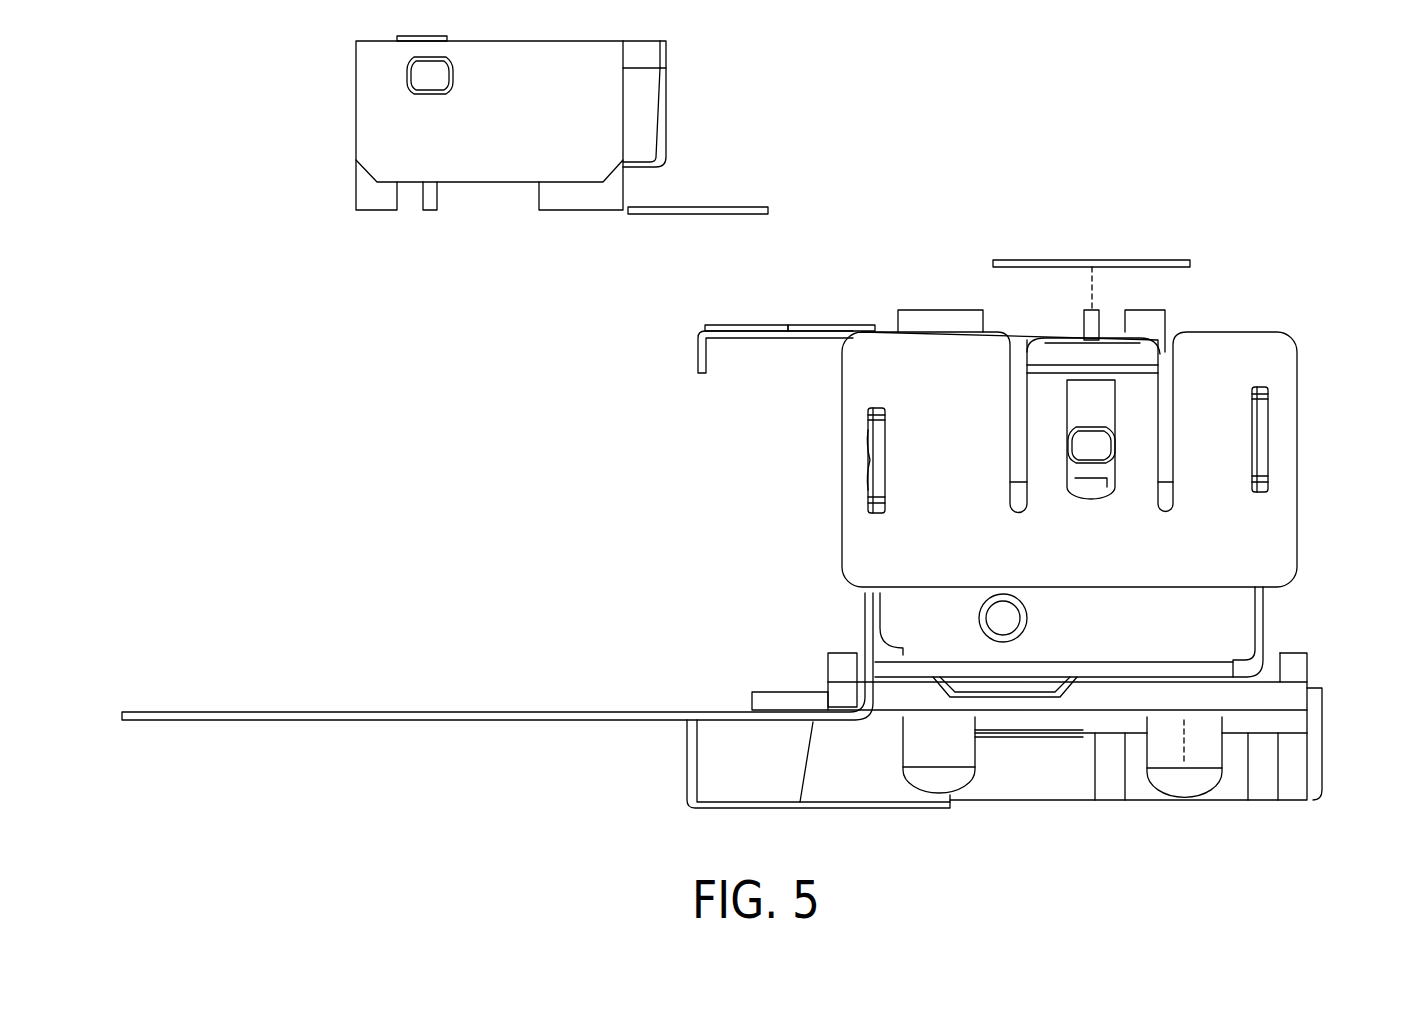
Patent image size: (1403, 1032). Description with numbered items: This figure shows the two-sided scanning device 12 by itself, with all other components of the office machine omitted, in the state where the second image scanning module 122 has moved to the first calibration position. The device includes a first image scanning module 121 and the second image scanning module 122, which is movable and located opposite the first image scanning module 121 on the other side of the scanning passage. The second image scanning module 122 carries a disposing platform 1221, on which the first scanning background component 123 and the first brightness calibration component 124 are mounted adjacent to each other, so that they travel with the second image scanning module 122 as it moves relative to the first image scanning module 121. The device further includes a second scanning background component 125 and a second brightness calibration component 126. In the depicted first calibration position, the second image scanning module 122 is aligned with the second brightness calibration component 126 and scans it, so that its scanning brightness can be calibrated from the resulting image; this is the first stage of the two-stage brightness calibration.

The two-sided scanning device 12 is at (1268, 138).
The first image scanning module 121 is at (430, 212).
The second image scanning module 122 is at (1092, 312).
The disposing platform 1221 is at (758, 335).
The first scanning background component 123 is at (810, 327).
The first brightness calibration component 124 is at (730, 329).
The second scanning background component 125 is at (712, 205).
The second brightness calibration component 126 is at (1180, 262).